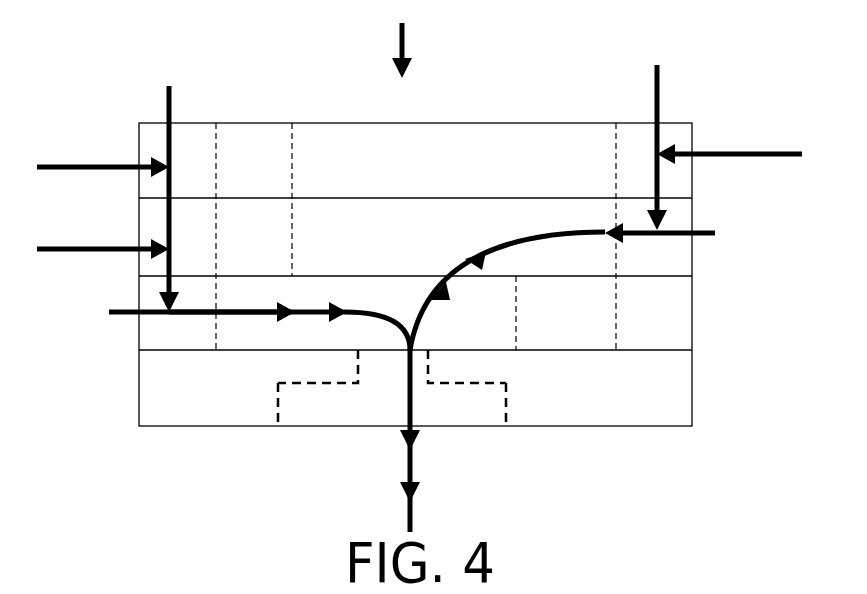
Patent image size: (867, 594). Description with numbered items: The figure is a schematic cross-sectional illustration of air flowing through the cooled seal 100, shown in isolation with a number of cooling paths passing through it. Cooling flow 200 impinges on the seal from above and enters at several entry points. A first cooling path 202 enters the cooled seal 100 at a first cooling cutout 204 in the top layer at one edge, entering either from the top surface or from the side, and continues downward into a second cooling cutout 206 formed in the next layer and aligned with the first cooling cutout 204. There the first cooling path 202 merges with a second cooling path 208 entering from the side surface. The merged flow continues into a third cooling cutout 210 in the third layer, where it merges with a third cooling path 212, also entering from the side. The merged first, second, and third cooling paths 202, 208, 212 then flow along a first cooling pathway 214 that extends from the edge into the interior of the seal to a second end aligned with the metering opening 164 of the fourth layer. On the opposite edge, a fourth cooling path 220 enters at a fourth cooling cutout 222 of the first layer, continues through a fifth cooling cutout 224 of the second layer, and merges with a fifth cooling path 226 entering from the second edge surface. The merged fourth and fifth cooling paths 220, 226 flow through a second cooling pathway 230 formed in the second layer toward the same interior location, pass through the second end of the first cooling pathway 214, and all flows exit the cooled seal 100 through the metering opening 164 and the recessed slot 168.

The cooled seal 100 is at (738, 30).
The cooling flow 200 is at (404, 50).
The first cooling path 202 is at (170, 108).
The first cooling cutout 204 is at (198, 162).
The second cooling cutout 206 is at (190, 241).
The second cooling path 208 is at (92, 245).
The third cooling cutout 210 is at (192, 296).
The third cooling path 212 is at (128, 316).
The first cooling pathway 214 is at (380, 406).
The fourth cooling path 220 is at (658, 98).
The fourth cooling cutout 222 is at (630, 162).
The fifth cooling cutout 224 is at (630, 222).
The fifth cooling path 226 is at (715, 233).
The second cooling pathway 230 is at (450, 289).
The metering opening 164 is at (430, 372).
The recessed slot 168 is at (507, 414).